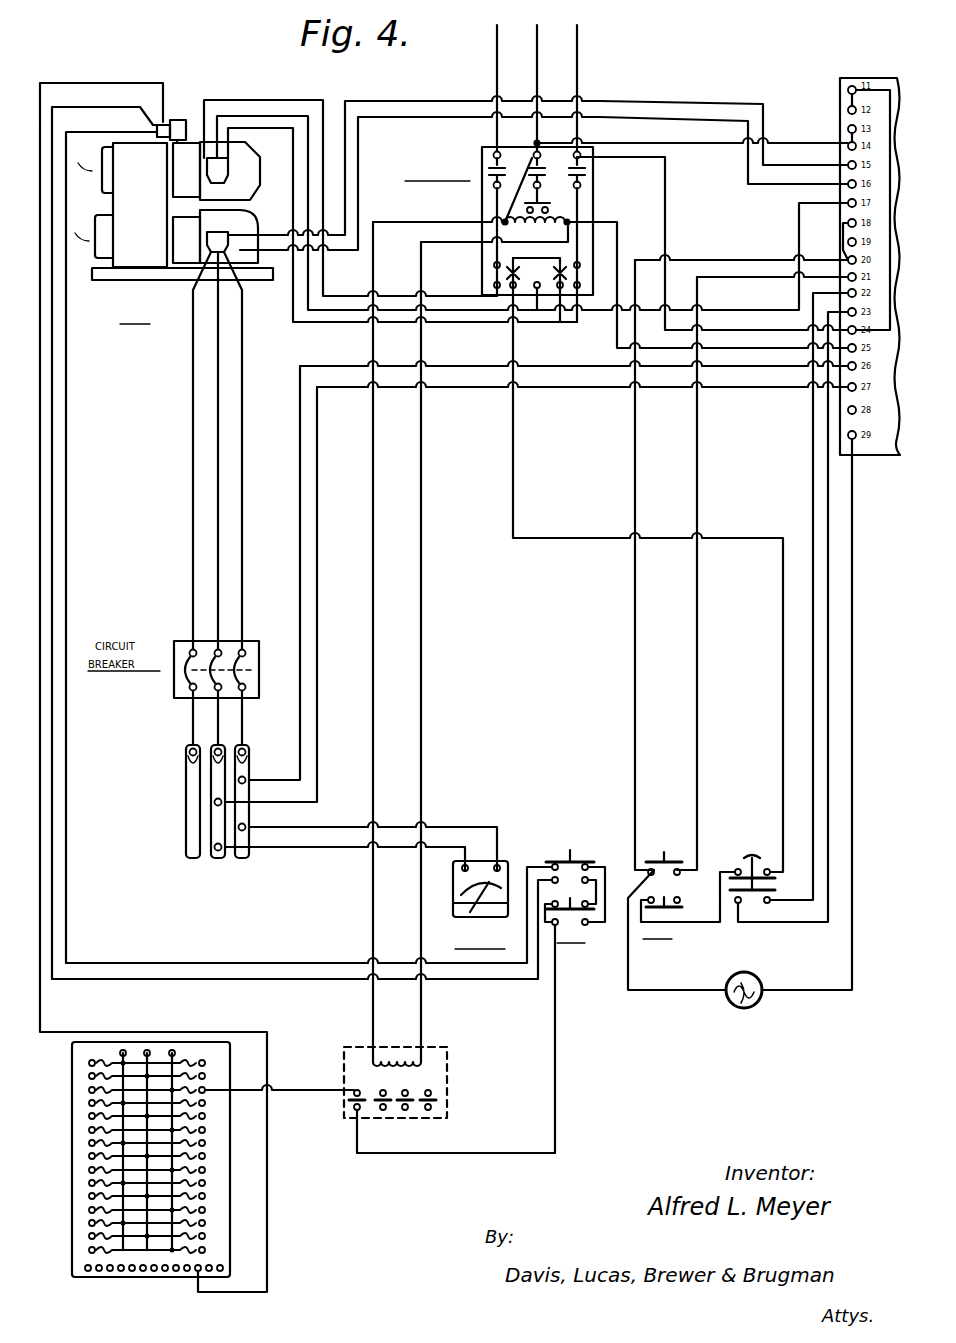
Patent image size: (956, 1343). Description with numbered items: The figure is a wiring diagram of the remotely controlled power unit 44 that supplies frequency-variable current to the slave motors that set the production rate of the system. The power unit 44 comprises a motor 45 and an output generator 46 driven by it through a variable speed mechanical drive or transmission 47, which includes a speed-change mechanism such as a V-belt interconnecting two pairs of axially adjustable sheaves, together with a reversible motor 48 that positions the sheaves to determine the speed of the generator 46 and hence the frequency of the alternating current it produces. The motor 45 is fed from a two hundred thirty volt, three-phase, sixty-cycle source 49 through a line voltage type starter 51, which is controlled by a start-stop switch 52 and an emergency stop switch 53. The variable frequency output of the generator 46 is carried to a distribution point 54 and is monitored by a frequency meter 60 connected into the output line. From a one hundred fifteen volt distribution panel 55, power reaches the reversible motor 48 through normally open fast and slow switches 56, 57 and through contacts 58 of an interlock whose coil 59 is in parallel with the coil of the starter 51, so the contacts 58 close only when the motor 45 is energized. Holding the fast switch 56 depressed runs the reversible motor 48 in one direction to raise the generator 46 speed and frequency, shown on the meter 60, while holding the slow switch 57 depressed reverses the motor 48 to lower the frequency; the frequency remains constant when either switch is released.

The power unit 44 is at (128, 258).
The motor 45 is at (232, 158).
The output generator 46 is at (203, 258).
The variable speed mechanical drive or transmission 47 is at (149, 197).
The reversible motor 48 is at (183, 120).
The 230-volt, 3-phase, 60-cycle source 49 is at (560, 58).
The line voltage type starter 51 is at (482, 195).
The start-stop switch 52 is at (683, 893).
The emergency stop switch 53 is at (778, 892).
The distribution point 54 is at (178, 825).
The 115-volt distribution panel 55 is at (228, 1208).
The fast switch 56 is at (572, 857).
The slow switch 57 is at (590, 925).
The contacts 58 is at (352, 1105).
The coil 59 is at (423, 1060).
The meter 60 is at (502, 858).